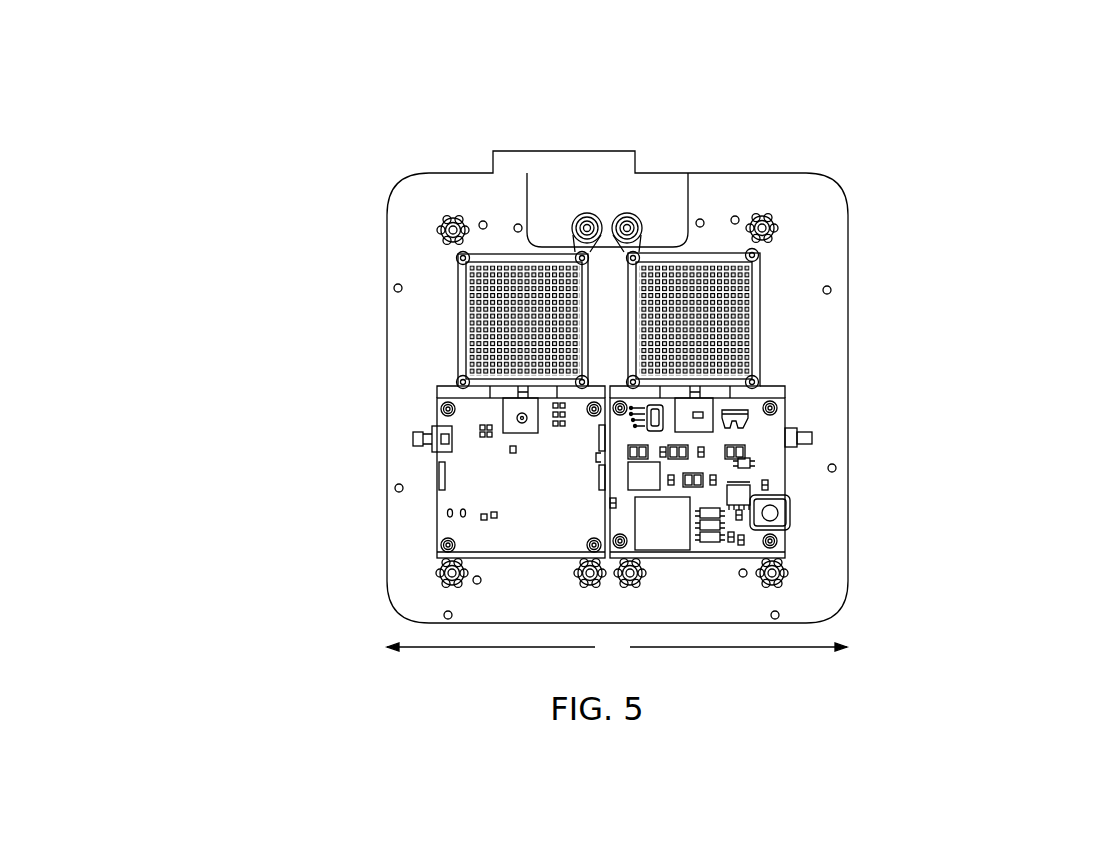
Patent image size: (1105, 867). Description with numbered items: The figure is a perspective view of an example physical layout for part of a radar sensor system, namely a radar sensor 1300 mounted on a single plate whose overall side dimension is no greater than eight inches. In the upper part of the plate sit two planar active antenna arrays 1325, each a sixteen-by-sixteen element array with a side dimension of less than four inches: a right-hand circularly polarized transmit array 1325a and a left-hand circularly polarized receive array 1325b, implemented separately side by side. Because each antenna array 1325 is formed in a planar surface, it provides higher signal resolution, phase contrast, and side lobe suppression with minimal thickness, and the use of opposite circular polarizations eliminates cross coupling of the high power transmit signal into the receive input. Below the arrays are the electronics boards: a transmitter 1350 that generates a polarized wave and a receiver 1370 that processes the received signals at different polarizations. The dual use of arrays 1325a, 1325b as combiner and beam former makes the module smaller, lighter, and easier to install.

The radar sensor 1300 is at (903, 115).
The antenna array 1325 is at (955, 270).
The transmit array 1325a is at (677, 288).
The receive array 1325b is at (512, 307).
The transmitter 1350 is at (857, 472).
The receiver 1370 is at (258, 439).